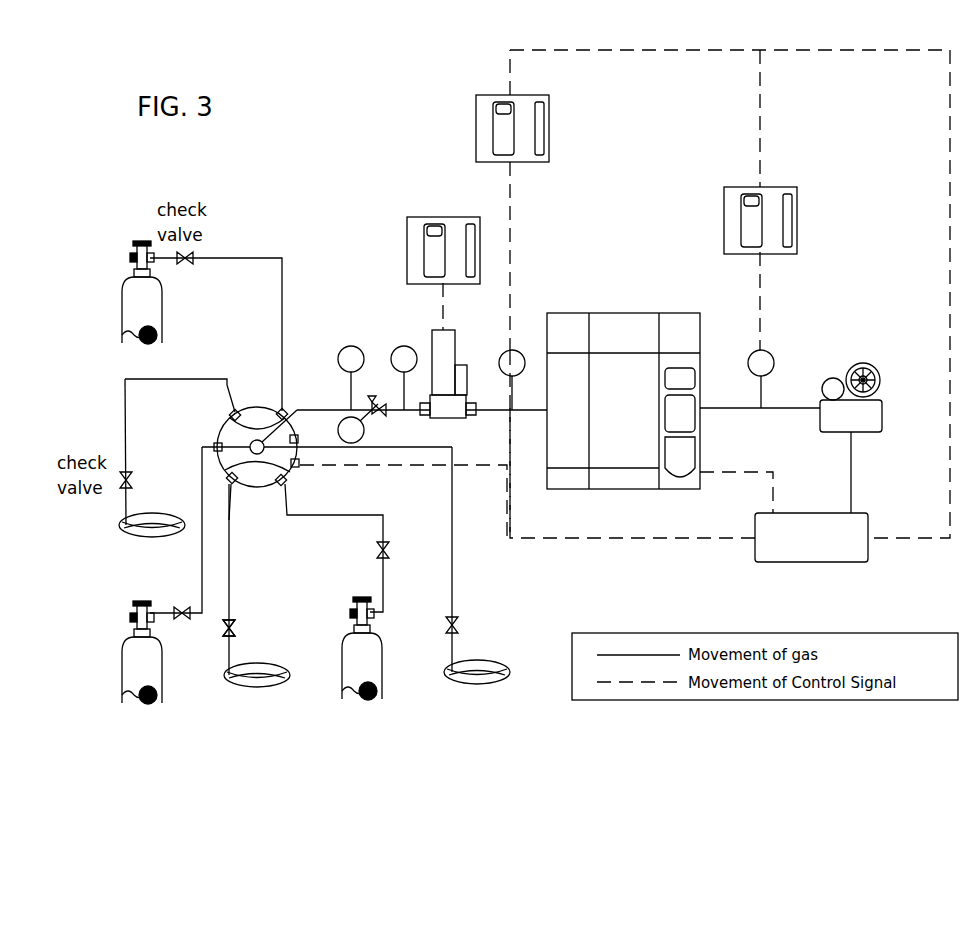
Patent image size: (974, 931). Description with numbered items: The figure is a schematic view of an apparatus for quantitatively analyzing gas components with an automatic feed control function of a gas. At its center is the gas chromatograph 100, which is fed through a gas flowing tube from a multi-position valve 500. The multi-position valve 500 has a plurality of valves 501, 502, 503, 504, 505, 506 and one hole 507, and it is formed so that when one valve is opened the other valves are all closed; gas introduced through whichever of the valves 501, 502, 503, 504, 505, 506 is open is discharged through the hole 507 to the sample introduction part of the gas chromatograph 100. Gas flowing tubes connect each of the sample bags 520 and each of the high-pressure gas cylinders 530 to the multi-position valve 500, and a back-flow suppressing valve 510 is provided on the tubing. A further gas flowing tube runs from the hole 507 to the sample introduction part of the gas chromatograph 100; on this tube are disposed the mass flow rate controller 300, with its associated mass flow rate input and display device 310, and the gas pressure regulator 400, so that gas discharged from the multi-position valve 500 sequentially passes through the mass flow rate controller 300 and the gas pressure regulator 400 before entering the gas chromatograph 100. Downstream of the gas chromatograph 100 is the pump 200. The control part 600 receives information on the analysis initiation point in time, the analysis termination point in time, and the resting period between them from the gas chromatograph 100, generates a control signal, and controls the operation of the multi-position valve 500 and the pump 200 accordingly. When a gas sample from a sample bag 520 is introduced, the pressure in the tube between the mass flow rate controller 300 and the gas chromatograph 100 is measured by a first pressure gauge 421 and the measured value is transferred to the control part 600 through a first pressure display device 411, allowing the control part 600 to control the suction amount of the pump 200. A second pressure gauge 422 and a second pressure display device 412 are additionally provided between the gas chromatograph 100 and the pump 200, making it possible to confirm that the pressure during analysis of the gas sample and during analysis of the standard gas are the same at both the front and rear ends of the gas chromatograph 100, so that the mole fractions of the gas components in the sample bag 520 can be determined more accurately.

The gas chromatograph 100 is at (628, 312).
The pump 200 is at (833, 433).
The mass flow rate controller 300 is at (457, 336).
The mass flow rate input and display device 310 is at (443, 217).
The gas pressure regulator 400 is at (376, 396).
The first pressure display device 411 is at (550, 125).
The second pressure display device 412 is at (798, 216).
The first pressure gauge 421 is at (516, 350).
The second pressure gauge 422 is at (775, 363).
The multi-position valve 500 is at (262, 492).
The valve 501 is at (226, 482).
The valve 502 is at (216, 442).
The valve 503 is at (240, 410).
The valve 504 is at (284, 410).
The valve 505 is at (297, 438).
The valve 506 is at (286, 484).
The hole 507 is at (302, 464).
The back-flow suppressing valve 510 is at (236, 628).
The sample bag 520 is at (124, 514).
The high-pressure gas cylinder 530 is at (122, 318).
The control part 600 is at (815, 564).